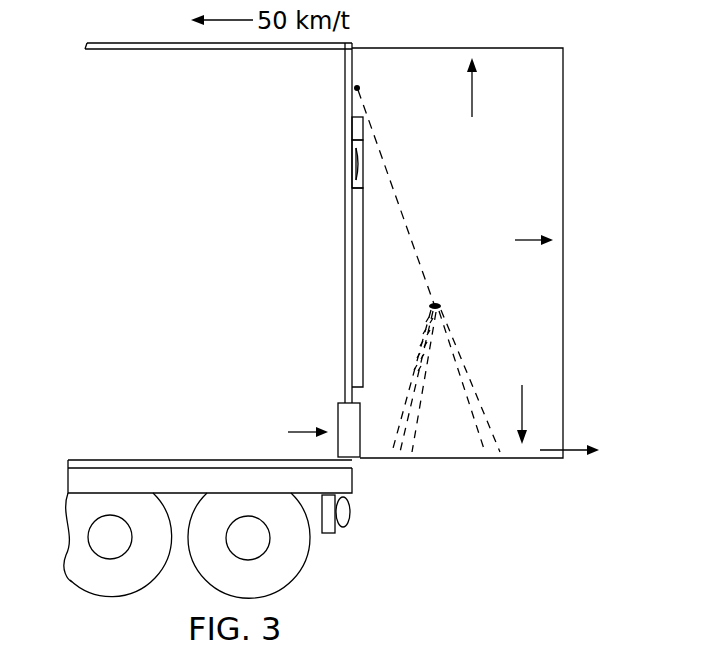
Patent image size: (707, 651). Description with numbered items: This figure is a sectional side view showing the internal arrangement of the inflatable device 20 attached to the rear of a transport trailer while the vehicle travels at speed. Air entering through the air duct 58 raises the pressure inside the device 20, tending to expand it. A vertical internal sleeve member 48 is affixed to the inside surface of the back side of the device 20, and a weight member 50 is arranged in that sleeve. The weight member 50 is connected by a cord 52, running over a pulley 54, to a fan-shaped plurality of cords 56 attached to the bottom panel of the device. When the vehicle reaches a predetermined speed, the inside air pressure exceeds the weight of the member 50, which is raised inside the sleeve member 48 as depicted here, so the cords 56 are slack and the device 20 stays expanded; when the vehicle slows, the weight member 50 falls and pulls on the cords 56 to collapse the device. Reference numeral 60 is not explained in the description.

The device 20 is at (594, 130).
The internal sleeve member 48 is at (363, 297).
The weight member 50 is at (363, 150).
The cord 52 is at (409, 230).
The pulley 54 is at (359, 88).
The fan-shaped plurality of cords 56 is at (416, 355).
The air duct 58 is at (345, 420).
The air outlet 60 is at (565, 448).